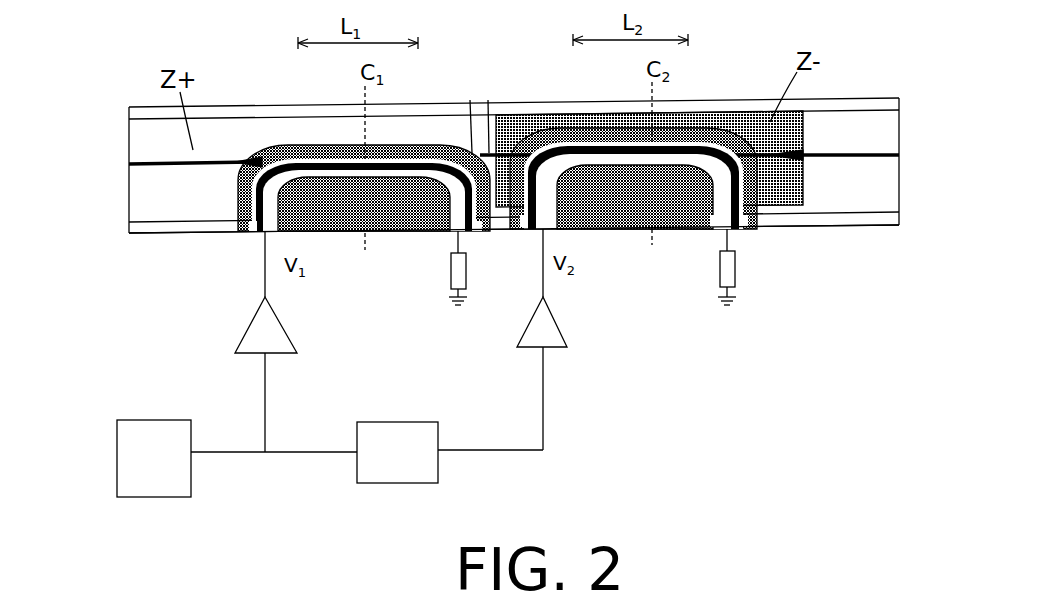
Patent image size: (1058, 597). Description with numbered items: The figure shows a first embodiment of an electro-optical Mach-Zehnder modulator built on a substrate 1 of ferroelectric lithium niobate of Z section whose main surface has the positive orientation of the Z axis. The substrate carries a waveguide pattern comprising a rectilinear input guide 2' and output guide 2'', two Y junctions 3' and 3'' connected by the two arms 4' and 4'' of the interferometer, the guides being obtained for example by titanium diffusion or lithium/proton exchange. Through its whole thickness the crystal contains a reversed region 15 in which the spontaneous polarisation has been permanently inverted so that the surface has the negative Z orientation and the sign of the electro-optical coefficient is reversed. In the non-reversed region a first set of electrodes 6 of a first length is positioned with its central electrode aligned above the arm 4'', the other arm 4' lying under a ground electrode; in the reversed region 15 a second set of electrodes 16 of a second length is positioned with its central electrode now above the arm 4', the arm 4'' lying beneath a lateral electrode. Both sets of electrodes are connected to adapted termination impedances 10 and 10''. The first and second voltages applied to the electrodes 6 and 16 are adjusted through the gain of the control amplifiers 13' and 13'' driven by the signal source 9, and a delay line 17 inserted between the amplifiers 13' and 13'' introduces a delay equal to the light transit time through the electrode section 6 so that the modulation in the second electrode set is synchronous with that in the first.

The substrate 1 is at (863, 220).
The input guide 2' is at (176, 119).
The output guide 2'' is at (845, 107).
The Y junction 3' is at (237, 116).
The Y junction 3'' is at (809, 220).
The arm of the interferometer 4' is at (481, 94).
The arm of the interferometer 4'' is at (454, 94).
The set of electrodes 6 is at (455, 234).
The signal source 9 is at (125, 437).
The termination impedance 10 is at (428, 291).
The termination impedance 10'' is at (693, 292).
The control amplifier 13' is at (229, 340).
The control amplifier 13'' is at (501, 337).
The reversed region 15 is at (737, 122).
The second set of electrodes 16 is at (716, 231).
The delay line 17 is at (358, 463).